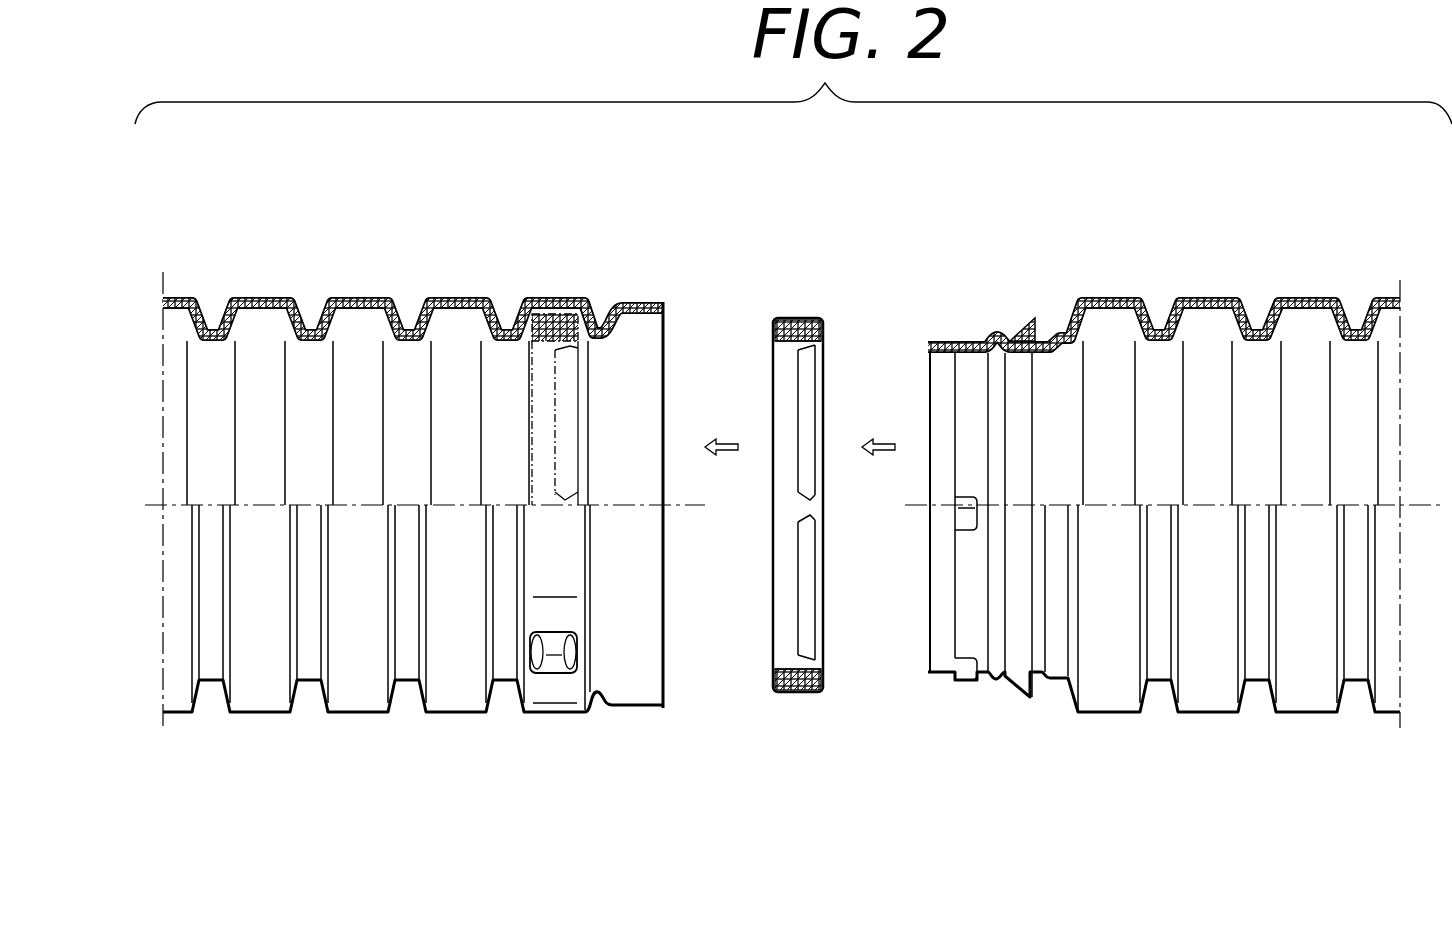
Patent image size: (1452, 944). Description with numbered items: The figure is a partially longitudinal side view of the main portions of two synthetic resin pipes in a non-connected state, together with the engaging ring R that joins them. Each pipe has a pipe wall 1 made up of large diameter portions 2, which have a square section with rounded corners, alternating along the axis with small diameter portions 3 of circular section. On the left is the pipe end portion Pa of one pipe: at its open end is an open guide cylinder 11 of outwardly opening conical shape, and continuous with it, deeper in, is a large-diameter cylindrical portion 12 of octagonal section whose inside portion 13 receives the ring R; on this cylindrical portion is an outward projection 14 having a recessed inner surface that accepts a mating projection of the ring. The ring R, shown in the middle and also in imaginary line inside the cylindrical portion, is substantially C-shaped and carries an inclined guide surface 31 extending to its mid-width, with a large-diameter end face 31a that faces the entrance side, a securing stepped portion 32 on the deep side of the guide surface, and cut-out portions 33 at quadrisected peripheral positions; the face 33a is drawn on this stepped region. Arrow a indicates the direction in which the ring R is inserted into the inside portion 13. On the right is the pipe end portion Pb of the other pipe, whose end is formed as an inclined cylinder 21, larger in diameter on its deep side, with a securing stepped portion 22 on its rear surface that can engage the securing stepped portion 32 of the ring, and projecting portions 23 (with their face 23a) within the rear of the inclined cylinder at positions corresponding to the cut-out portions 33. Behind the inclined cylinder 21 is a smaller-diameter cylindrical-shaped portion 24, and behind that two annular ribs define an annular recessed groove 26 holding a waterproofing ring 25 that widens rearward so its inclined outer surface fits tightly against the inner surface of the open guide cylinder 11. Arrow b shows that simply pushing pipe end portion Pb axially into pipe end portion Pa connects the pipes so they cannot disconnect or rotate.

The pipe end portion Pa is at (260, 250).
The pipe end portion Pb is at (1310, 262).
The engaging ring R is at (540, 413).
The pipe wall 1 is at (232, 720).
The large diameter portion 2 is at (262, 700).
The small diameter portion 3 is at (310, 668).
The open guide cylinder 11 is at (636, 300).
The large-diameter cylindrical portion 12 is at (563, 300).
The inside portion 13 is at (546, 302).
The projection 14 is at (562, 668).
The inclined cylinder 21 is at (935, 342).
The securing stepped portion 22 is at (970, 620).
The projecting portion 23 is at (968, 340).
The rib engaging face 23a is at (958, 555).
The cylindrical-shaped portion 24 is at (1000, 592).
The waterproofing ring 25 is at (1025, 322).
The annular recessed groove 26 is at (1030, 372).
The inclined guide surface 31 is at (806, 634).
The end face 31a is at (822, 598).
The securing stepped portion 32 is at (800, 598).
The cut-out portion 33 is at (800, 498).
The engaging face 33a is at (795, 520).
The arrow a is at (721, 433).
The arrow b is at (878, 433).